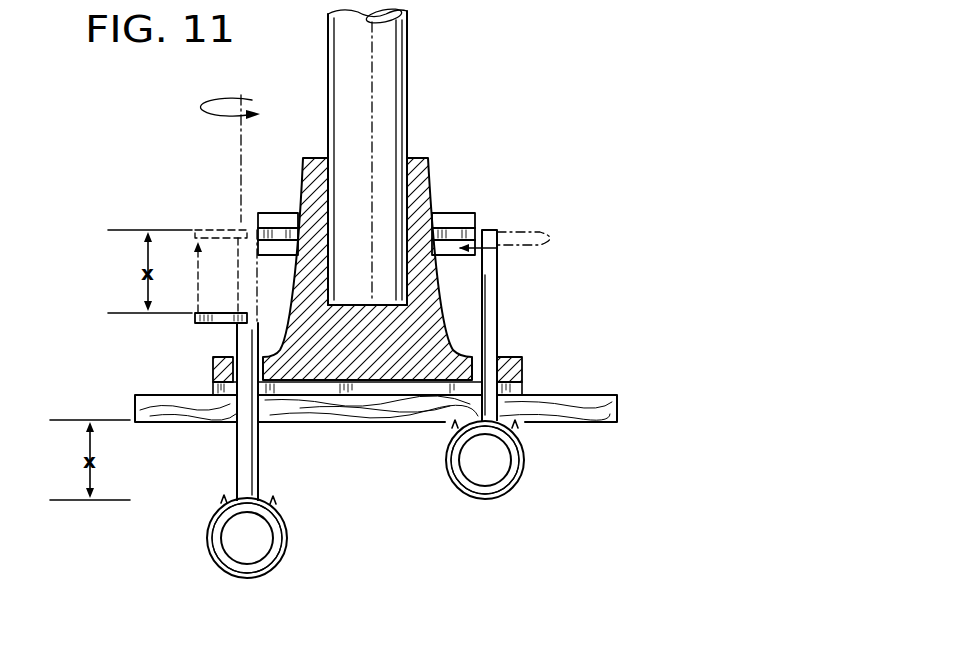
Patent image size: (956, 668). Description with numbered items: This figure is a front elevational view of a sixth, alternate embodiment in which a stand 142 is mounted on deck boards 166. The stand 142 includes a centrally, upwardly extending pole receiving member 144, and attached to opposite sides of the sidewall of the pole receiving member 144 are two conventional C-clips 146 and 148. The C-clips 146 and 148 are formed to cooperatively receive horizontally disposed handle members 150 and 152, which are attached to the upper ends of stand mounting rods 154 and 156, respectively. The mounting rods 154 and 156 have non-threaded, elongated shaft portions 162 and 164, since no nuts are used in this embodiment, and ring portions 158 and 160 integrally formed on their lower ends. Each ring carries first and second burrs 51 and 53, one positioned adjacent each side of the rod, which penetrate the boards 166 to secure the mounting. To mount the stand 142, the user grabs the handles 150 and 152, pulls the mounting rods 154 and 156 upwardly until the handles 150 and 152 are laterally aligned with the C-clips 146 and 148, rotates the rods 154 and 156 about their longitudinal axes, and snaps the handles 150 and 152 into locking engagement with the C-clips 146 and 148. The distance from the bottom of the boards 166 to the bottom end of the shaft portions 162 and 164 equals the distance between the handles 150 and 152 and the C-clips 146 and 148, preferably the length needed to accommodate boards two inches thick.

The stand 142 is at (522, 370).
The pole receiving member 144 is at (432, 167).
The C-clip 146 is at (278, 213).
The C-clip 148 is at (470, 213).
The handle member 150 is at (215, 230).
The handle member 152 is at (480, 229).
The stand mounting rod 154 is at (226, 462).
The stand mounting rod 156 is at (502, 290).
The ring portion 158 is at (270, 562).
The ring portion 160 is at (492, 498).
The shaft portion 162 is at (262, 443).
The shaft portion 164 is at (498, 333).
The boards 166 is at (595, 424).
The burr 51 is at (272, 500).
The burr 53 is at (223, 498).